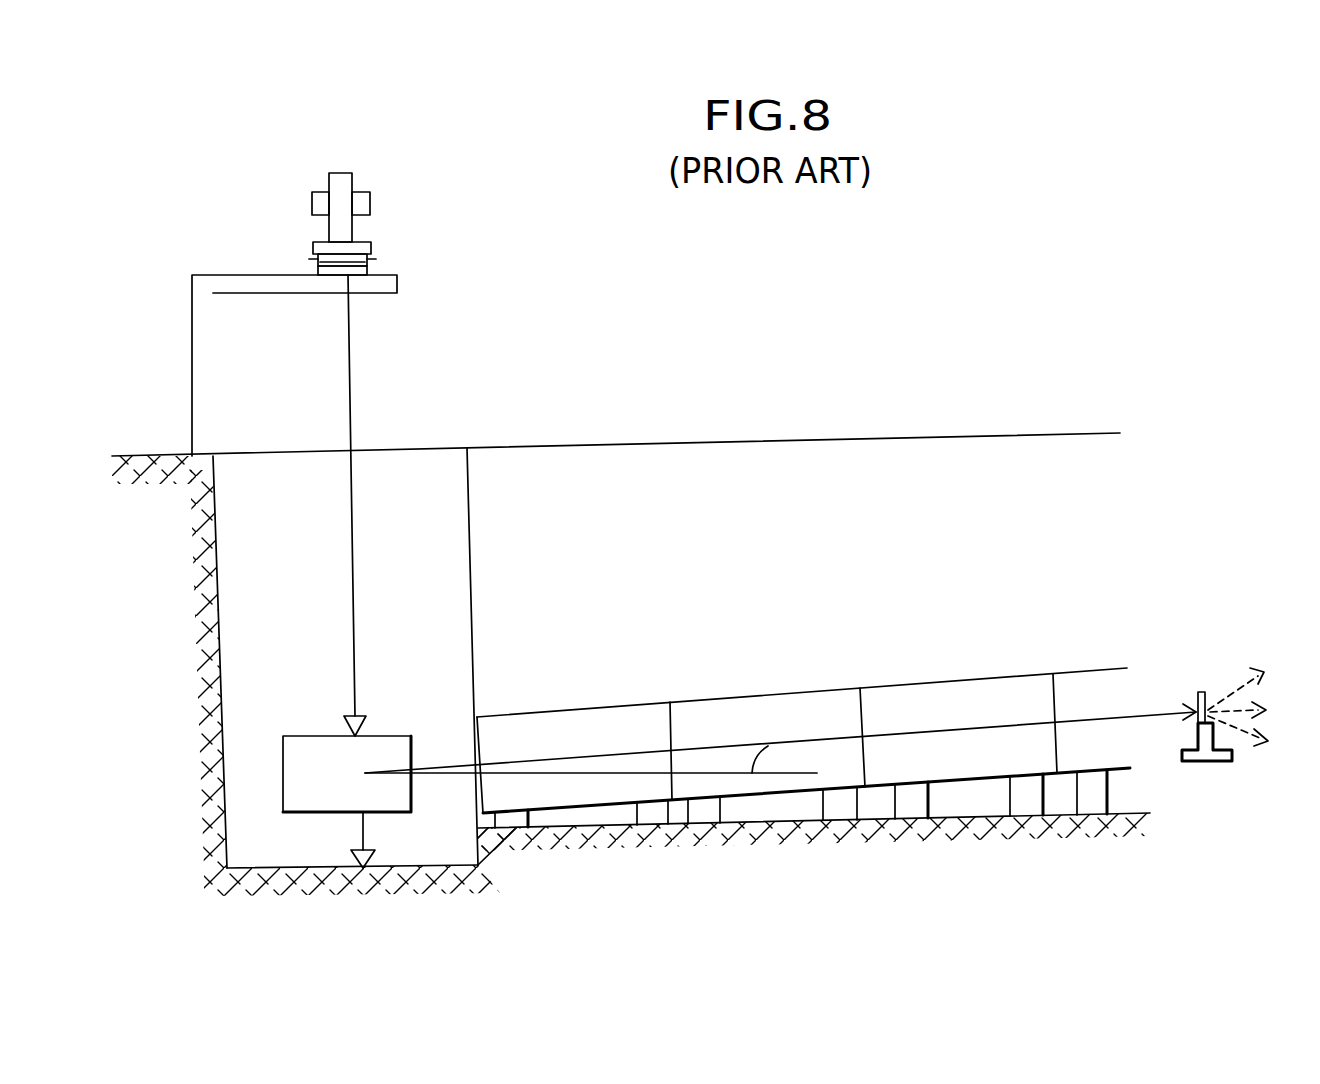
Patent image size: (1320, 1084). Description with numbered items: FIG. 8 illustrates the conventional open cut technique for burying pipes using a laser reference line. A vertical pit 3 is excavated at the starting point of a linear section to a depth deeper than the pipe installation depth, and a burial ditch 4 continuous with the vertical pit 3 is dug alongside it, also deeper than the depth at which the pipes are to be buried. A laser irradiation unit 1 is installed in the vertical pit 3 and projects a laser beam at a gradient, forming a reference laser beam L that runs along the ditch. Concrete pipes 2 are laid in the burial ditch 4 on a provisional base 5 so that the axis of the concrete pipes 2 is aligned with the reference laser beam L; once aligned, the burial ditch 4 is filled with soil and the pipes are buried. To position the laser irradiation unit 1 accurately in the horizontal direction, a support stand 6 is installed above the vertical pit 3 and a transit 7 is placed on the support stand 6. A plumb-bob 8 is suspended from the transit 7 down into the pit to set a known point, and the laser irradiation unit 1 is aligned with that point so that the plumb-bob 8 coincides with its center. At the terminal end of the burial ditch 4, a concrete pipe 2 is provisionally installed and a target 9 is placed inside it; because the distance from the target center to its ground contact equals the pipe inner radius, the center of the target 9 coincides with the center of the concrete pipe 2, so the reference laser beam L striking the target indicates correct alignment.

The laser irradiation unit 1 is at (317, 766).
The concrete pipes 2 is at (600, 725).
The vertical pit 3 is at (410, 480).
The burial ditch 4 is at (880, 487).
The provisional base 5 is at (915, 798).
The support stand 6 is at (193, 410).
The transit 7 is at (354, 173).
The plumb line 8 is at (350, 405).
The target 9 is at (1198, 690).
The reference laser beam L is at (990, 725).